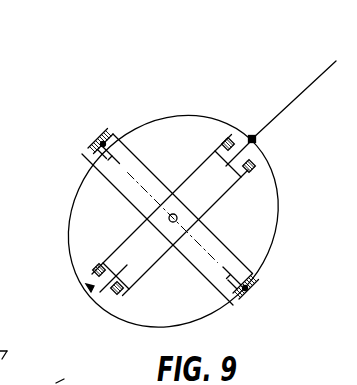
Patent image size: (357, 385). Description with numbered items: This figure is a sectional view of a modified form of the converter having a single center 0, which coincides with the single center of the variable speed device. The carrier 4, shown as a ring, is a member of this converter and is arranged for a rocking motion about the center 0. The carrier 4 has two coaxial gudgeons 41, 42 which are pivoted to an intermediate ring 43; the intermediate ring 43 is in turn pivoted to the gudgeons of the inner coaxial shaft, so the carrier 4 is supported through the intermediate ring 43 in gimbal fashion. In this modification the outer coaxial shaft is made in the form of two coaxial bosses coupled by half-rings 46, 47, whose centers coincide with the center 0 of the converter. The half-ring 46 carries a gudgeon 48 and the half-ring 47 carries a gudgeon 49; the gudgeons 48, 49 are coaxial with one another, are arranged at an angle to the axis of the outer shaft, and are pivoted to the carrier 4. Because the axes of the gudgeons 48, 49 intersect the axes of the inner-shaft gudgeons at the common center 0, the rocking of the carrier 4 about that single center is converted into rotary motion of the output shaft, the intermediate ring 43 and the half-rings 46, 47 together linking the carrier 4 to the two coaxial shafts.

The carrier 4 is at (270, 240).
The single center 0 is at (172, 212).
The coaxial gudgeon 41 is at (236, 167).
The coaxial gudgeon 42 is at (92, 288).
The intermediate ring 43 is at (122, 241).
The half-ring 46 is at (91, 139).
The half-ring 47 is at (261, 292).
The gudgeon 48 is at (102, 166).
The gudgeon 49 is at (226, 287).